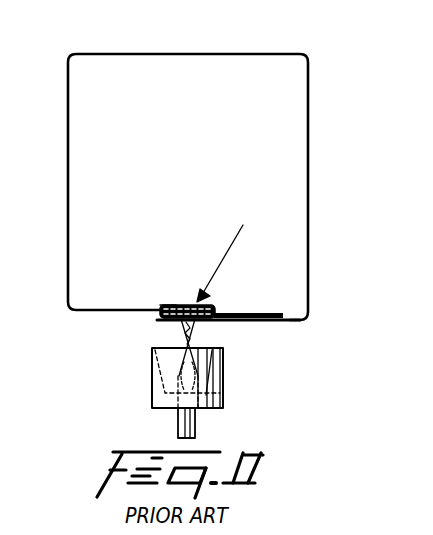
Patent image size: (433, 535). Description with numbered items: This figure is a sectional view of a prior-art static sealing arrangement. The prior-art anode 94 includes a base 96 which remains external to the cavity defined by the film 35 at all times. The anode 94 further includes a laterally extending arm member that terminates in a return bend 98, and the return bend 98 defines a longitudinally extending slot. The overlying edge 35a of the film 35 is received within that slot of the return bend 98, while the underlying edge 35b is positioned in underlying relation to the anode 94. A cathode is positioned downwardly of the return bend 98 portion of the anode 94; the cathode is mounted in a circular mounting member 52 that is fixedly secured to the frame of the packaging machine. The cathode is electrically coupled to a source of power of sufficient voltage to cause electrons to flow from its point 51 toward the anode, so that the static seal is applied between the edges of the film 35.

The film 35 is at (253, 54).
The overlying edge 35a is at (213, 306).
The underlying edge 35b is at (207, 322).
The point 51 is at (185, 344).
The circular mounting member 52 is at (217, 395).
The anode 94 is at (230, 253).
The base 96 is at (263, 313).
The return bend 98 is at (168, 305).